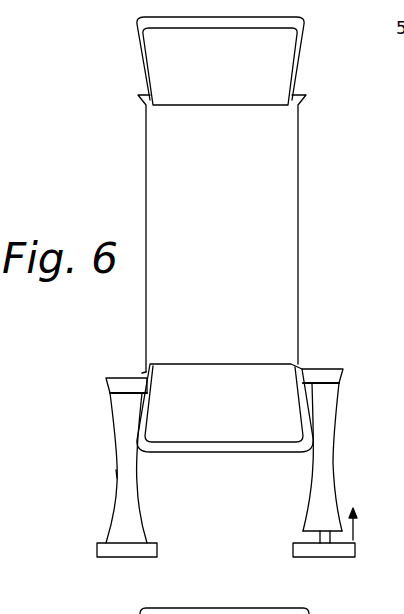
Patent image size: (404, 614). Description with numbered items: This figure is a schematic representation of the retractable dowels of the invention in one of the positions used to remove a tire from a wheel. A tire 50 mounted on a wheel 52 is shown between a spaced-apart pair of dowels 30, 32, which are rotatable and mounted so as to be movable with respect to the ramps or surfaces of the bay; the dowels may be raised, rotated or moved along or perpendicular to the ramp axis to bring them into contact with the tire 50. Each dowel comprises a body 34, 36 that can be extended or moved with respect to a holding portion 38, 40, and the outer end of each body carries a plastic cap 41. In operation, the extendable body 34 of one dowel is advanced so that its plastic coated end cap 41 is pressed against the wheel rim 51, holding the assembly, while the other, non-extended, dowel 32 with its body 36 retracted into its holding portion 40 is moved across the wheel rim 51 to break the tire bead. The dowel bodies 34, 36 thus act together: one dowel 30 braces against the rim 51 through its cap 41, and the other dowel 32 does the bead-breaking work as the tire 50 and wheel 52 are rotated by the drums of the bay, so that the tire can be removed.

The dowel 30 is at (338, 463).
The dowel 32 is at (112, 471).
The body 34 is at (333, 420).
The body 36 is at (118, 418).
The holding portion 38 is at (347, 552).
The holding portion 40 is at (102, 547).
The plastic cap 41 is at (110, 385).
The tire 50 is at (305, 60).
The wheel rim 51 is at (300, 366).
The wheel 52 is at (298, 205).